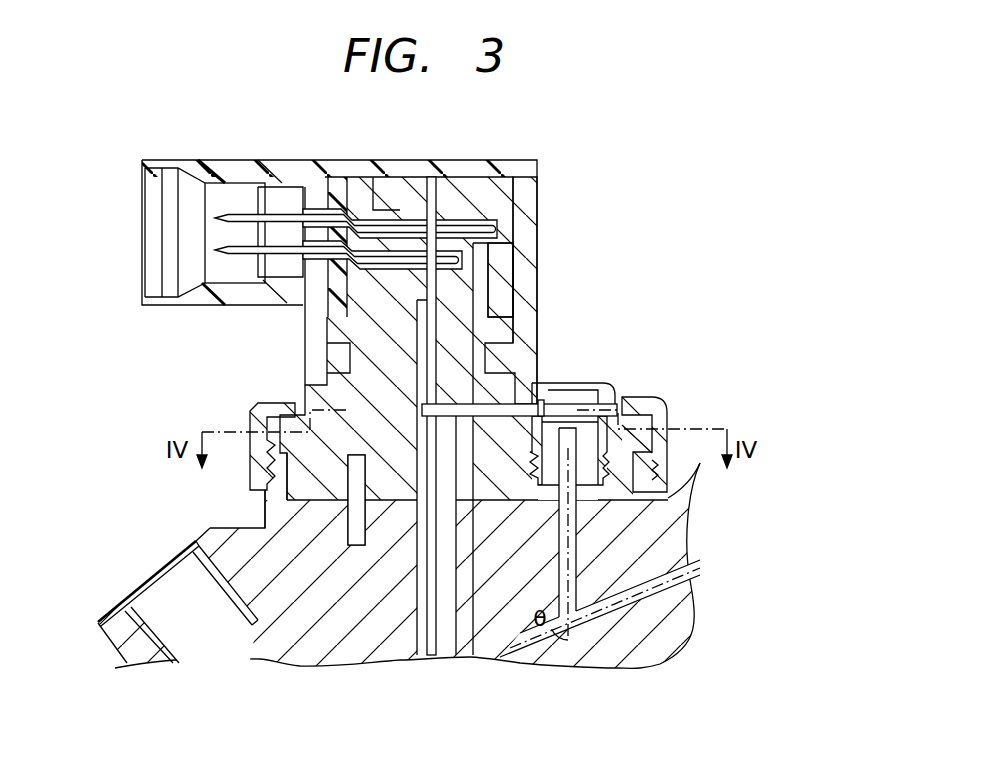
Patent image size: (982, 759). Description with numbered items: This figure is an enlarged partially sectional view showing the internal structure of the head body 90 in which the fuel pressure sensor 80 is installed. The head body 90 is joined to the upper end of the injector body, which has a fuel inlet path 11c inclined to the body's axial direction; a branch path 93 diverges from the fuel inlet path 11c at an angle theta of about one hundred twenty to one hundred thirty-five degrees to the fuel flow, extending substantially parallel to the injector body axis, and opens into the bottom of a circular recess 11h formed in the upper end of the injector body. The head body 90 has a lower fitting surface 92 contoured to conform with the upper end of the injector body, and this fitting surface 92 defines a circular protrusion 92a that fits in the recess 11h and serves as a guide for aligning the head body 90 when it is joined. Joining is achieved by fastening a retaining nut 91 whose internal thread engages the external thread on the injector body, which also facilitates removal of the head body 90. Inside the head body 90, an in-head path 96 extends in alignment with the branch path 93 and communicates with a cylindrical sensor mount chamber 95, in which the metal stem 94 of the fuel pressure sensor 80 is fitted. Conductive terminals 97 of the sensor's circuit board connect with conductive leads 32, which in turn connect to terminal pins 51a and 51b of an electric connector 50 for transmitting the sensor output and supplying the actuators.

The electric connector 50 is at (410, 160).
The terminal pin 51a is at (240, 213).
The terminal pin 51b is at (240, 257).
The head body 90 is at (275, 361).
The conductive terminals 97 is at (490, 393).
The fuel pressure sensor 80 is at (588, 365).
The sensor mount chamber 95 is at (517, 397).
The metal stem 94 is at (618, 416).
The retaining nut 91 is at (648, 394).
The fitting surface 92 is at (250, 468).
The protrusion 92a is at (268, 517).
The conductive leads 32 is at (432, 545).
The recess 11h is at (700, 463).
The in-head path 96 is at (580, 508).
The branch path 93 is at (588, 544).
The fuel inlet path 11c is at (660, 587).